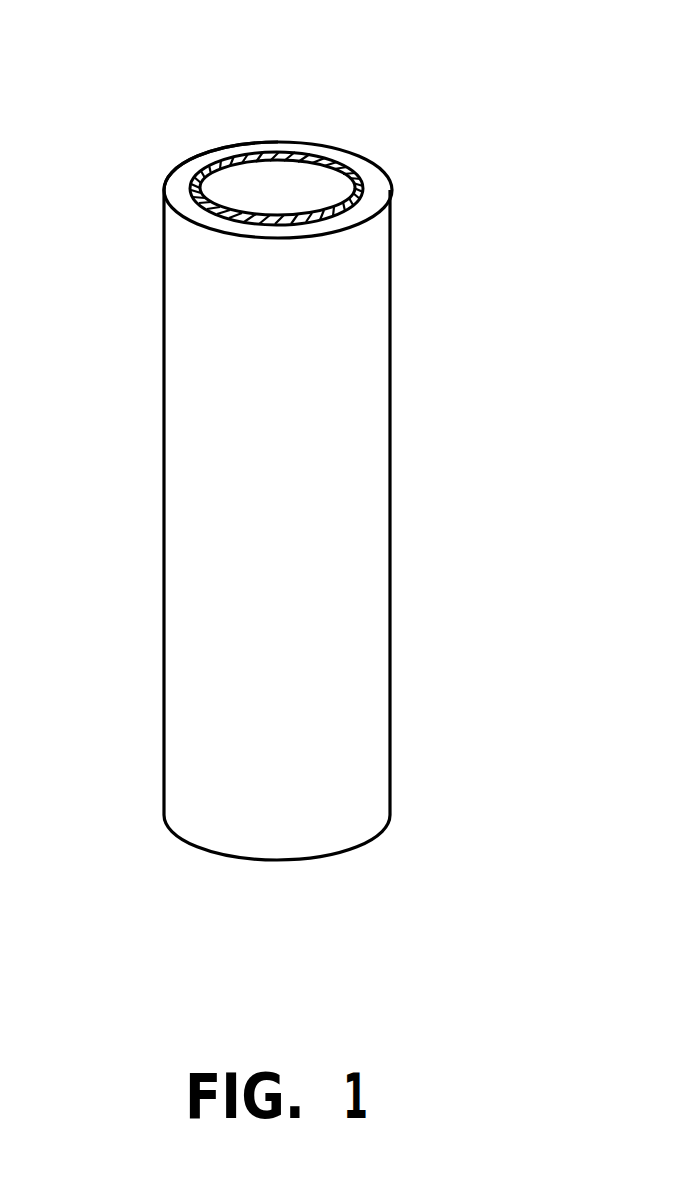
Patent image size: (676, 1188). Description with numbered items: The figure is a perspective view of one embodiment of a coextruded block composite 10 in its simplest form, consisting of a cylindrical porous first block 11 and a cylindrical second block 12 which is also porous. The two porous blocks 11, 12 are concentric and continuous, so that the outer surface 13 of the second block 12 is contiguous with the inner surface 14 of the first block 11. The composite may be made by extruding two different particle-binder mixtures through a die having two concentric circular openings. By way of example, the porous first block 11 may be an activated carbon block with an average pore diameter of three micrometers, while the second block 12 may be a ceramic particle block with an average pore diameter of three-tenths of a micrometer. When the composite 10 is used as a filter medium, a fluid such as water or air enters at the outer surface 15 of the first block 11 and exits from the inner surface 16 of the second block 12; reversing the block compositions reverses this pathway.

The coextruded block composite 10 is at (290, 432).
The porous first block 11 is at (375, 192).
The second block 12 is at (325, 150).
The outer surface of the second block 13 is at (193, 184).
The inner surface of the first block 14 is at (232, 236).
The outer surface of the porous first block 15 is at (343, 662).
The inner surface of the second block 16 is at (270, 183).